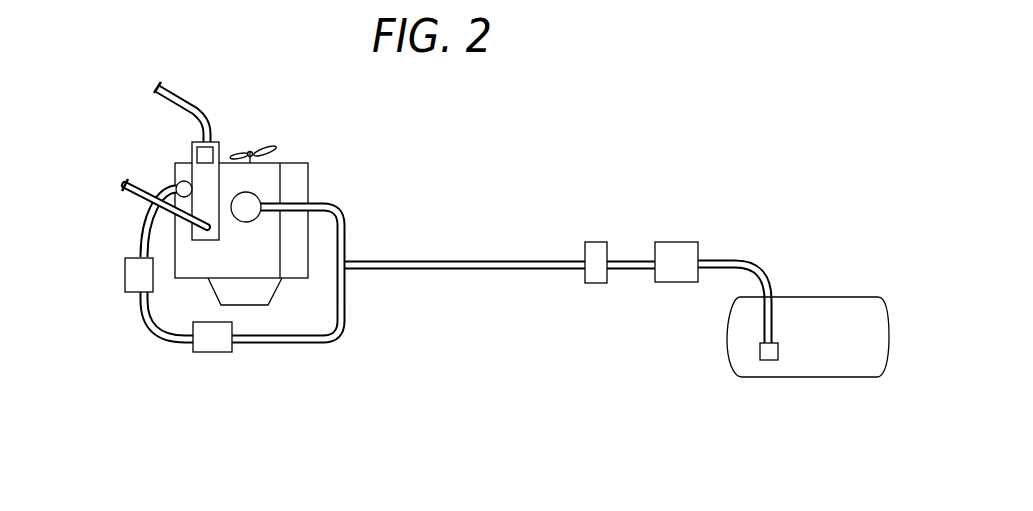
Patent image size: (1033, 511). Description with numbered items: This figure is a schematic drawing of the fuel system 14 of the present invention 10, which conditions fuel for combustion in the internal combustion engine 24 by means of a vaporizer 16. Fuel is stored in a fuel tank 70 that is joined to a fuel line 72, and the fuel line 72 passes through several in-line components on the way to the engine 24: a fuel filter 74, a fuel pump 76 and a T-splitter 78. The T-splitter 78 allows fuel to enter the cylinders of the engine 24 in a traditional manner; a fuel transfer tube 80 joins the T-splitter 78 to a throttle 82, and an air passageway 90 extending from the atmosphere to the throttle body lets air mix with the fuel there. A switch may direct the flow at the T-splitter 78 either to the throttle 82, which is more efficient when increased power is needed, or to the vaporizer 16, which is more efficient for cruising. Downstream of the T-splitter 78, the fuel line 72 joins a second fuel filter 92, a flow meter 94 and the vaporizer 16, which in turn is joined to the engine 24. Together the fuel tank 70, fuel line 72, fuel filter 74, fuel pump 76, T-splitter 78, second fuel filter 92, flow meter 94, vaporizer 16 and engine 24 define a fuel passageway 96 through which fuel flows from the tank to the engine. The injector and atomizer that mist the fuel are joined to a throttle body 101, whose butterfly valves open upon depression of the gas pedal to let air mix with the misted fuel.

The present invention 10 is at (479, 244).
The fuel system 14 is at (456, 245).
The vaporizer 16 is at (204, 183).
The internal combustion engine 24 is at (148, 333).
The fuel tank 70 is at (815, 310).
The fuel line 72 is at (482, 260).
The fuel filter 74 is at (672, 283).
The fuel pump 76 is at (590, 287).
The T-splitter 78 is at (347, 258).
The fuel transfer tube 80 is at (343, 217).
The throttle 82 is at (257, 193).
The air passageway 90 is at (318, 204).
The second fuel filter 92 is at (212, 342).
The flow meter 94 is at (142, 273).
The fuel passageway 96 is at (535, 260).
The throttle body 101 is at (176, 186).